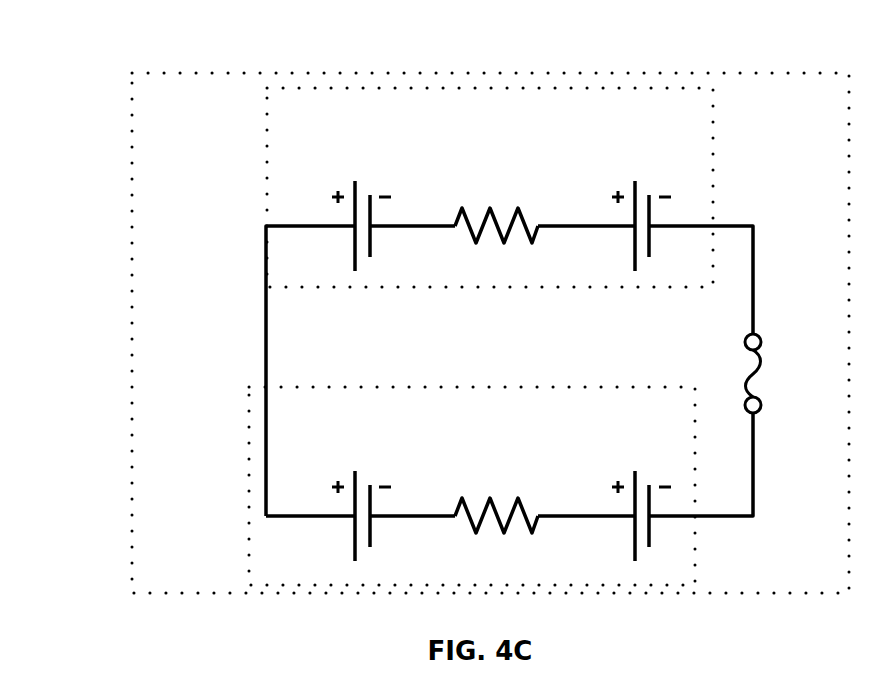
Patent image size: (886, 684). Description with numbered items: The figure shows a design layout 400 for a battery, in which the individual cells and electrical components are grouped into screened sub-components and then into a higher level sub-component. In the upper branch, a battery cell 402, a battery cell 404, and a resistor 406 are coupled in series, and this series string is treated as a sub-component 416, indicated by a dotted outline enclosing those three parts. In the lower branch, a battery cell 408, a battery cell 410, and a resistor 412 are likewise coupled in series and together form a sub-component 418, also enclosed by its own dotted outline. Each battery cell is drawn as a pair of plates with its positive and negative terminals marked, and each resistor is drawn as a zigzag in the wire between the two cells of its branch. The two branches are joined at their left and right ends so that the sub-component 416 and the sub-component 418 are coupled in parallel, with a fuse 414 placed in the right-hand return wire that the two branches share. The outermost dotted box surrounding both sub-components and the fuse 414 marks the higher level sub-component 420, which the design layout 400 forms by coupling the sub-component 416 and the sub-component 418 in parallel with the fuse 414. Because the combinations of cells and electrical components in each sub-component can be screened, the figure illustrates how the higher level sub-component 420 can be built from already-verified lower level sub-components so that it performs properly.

The design layout 400 is at (792, 34).
The battery cell 402 is at (335, 162).
The battery cell 404 is at (632, 162).
The resistor 406 is at (484, 175).
The battery cell 408 is at (355, 452).
The battery cell 410 is at (634, 453).
The resistor 412 is at (502, 462).
The fuse 414 is at (720, 362).
The sub-component 416 is at (249, 239).
The sub-component 418 is at (229, 510).
The higher level sub-component 420 is at (105, 162).